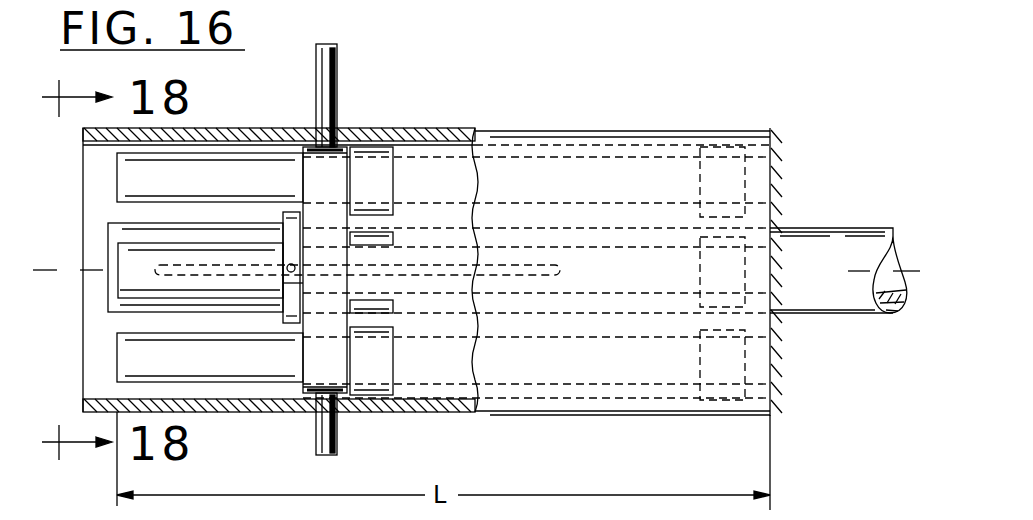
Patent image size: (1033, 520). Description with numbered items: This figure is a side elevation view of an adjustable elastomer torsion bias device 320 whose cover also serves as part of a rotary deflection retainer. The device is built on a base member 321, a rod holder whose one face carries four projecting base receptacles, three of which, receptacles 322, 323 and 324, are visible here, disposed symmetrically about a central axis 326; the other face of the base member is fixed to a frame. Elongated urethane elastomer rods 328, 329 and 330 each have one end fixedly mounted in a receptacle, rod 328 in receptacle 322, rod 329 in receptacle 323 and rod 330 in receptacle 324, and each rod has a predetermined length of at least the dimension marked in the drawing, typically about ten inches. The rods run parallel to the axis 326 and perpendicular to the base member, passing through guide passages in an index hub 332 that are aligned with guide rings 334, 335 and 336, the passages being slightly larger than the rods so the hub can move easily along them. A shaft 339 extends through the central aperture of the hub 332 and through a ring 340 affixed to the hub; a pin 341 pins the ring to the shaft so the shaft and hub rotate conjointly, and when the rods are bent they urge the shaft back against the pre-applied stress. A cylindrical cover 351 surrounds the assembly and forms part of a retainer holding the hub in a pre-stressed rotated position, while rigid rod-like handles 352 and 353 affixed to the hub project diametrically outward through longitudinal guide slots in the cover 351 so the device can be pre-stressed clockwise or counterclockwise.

The adjustable elastomer torsion bias device 320 is at (104, 173).
The base member 321 is at (753, 165).
The base receptacle 322 is at (700, 180).
The base receptacle 323 is at (700, 265).
The base receptacle 324 is at (700, 365).
The central axis 326 is at (102, 262).
The elastomer rod 328 is at (452, 182).
The elastomer rod 329 is at (443, 260).
The elastomer rod 330 is at (455, 365).
The index hub 332 is at (320, 182).
The guide ring 334 is at (362, 178).
The guide ring 335 is at (385, 285).
The guide ring 336 is at (368, 372).
The shaft 339 is at (117, 297).
The ring 340 is at (285, 218).
The pin 341 is at (283, 290).
The cylindrical cover 351 is at (552, 118).
The handle 352 is at (330, 45).
The handle 353 is at (320, 428).